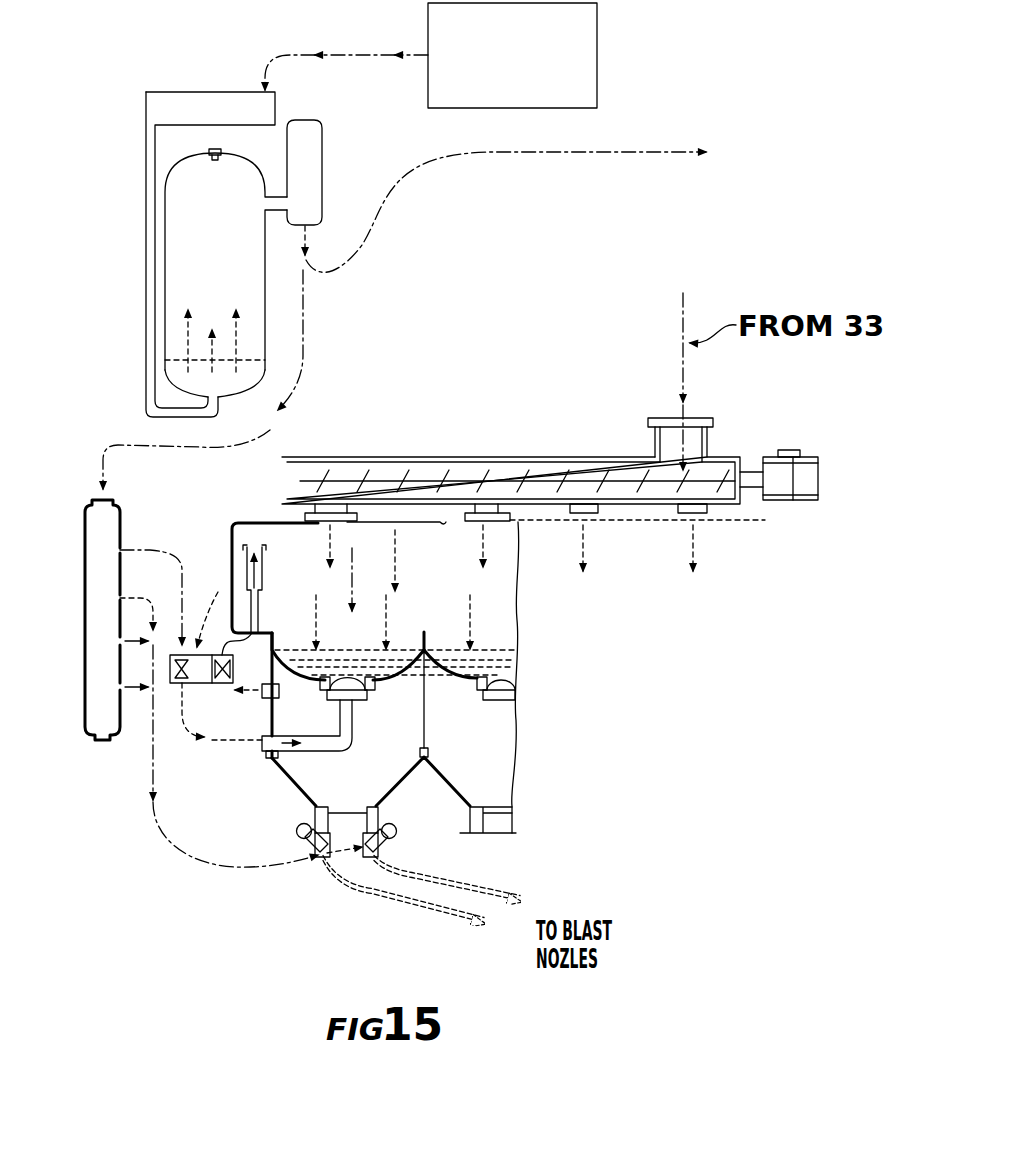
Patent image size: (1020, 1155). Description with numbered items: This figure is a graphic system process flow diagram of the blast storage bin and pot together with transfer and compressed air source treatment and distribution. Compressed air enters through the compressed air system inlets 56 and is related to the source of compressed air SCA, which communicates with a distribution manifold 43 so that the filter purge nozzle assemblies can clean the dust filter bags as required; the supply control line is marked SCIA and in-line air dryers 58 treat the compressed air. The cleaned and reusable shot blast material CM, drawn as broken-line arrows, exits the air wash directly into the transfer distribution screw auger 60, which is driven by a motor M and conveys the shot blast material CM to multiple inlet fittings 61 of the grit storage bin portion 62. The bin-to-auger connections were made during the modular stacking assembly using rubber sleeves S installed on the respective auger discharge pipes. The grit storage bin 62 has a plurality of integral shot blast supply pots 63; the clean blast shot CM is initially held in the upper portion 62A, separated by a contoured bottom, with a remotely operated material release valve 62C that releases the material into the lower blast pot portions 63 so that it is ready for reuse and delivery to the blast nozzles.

The compressed air system inlets 56 is at (190, 100).
The source of compressed air SCA is at (588, 43).
The supply control instrument air line SCIA is at (453, 160).
The shot blast material CM is at (685, 303).
The in line air dryers 58 is at (728, 431).
The transfer distribution screw auger 60 is at (450, 439).
The conveyor motor M is at (808, 465).
The inlet fittings 61 is at (312, 537).
The rubber sleeves S is at (518, 513).
The upper portion 62A is at (300, 577).
The distribution manifold 43 is at (90, 608).
The grit storage bin portion 62 is at (521, 615).
The remotely operated material release valve 62C is at (360, 705).
The shot blast supply pots 63 is at (505, 727).